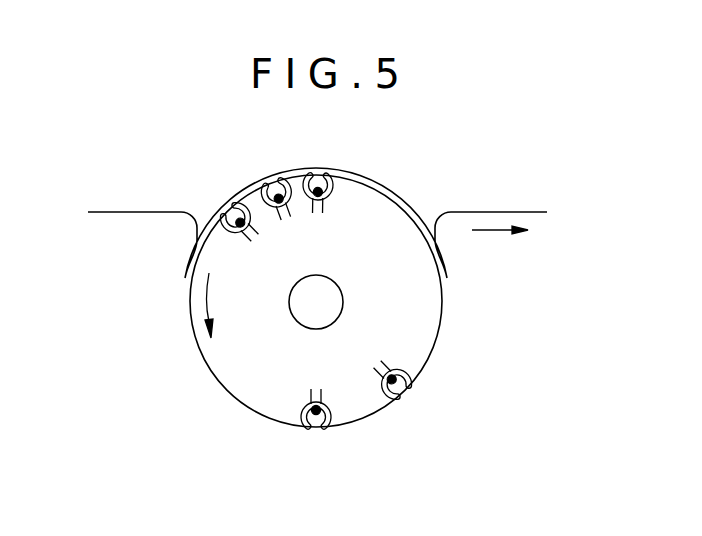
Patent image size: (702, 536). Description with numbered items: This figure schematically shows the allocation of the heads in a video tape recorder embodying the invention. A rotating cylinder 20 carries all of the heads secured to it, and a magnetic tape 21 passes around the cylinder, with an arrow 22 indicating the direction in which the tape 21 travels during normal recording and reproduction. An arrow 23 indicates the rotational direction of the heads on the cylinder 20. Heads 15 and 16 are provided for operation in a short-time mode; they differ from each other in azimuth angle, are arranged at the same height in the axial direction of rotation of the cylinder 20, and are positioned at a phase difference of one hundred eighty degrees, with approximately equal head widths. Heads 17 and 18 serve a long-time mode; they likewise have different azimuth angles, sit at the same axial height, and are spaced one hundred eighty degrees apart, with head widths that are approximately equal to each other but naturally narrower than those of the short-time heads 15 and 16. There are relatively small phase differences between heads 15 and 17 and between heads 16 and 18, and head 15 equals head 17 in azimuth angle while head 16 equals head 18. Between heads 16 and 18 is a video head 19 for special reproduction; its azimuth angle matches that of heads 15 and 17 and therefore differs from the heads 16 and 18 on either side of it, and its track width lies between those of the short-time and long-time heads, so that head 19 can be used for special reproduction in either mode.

The head 15 is at (383, 403).
The head 16 is at (235, 205).
The head 17 is at (295, 422).
The head 18 is at (328, 165).
The video head 19 is at (278, 177).
The rotating cylinder 20 is at (388, 197).
The magnetic tape 21 is at (500, 210).
The arrow 22 is at (483, 232).
The arrow 23 is at (205, 306).